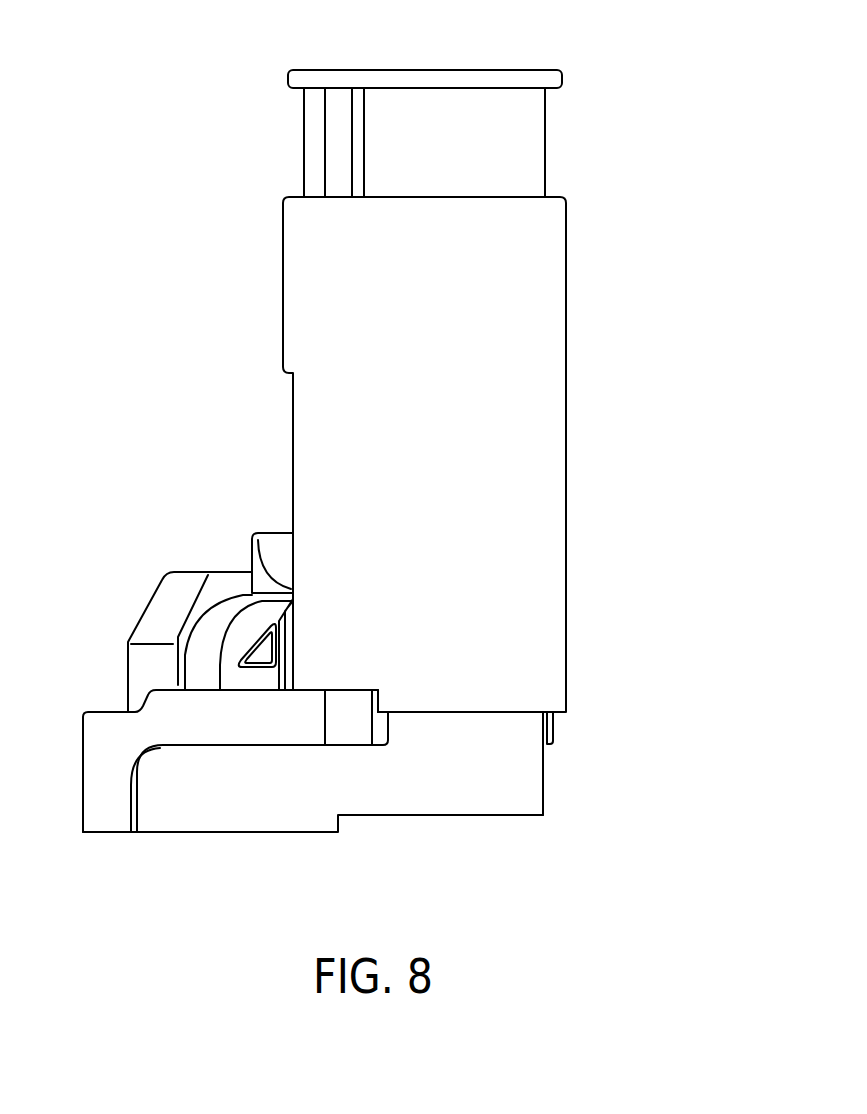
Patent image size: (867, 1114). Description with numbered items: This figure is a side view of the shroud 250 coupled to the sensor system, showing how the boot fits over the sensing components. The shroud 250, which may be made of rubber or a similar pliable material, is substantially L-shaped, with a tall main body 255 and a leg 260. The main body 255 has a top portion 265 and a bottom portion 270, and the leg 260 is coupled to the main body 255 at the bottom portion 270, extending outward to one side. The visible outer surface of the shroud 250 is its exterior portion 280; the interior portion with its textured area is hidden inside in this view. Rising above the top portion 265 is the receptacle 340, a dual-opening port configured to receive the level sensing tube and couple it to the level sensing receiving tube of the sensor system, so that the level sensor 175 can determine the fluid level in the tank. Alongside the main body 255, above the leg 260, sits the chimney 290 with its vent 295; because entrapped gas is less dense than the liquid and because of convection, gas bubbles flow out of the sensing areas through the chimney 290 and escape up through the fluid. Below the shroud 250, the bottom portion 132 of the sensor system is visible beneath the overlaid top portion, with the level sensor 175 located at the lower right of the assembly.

The receptacle 340 is at (278, 60).
The shroud 250 is at (419, 454).
The top portion 265 is at (595, 240).
The main body 255 is at (566, 385).
The exterior portion 280 is at (503, 563).
The bottom portion 270 is at (592, 653).
The vent 295 is at (267, 528).
The chimney 290 is at (228, 537).
The leg 260 is at (98, 708).
The bottom portion 132 is at (415, 833).
The level sensor 175 is at (515, 740).